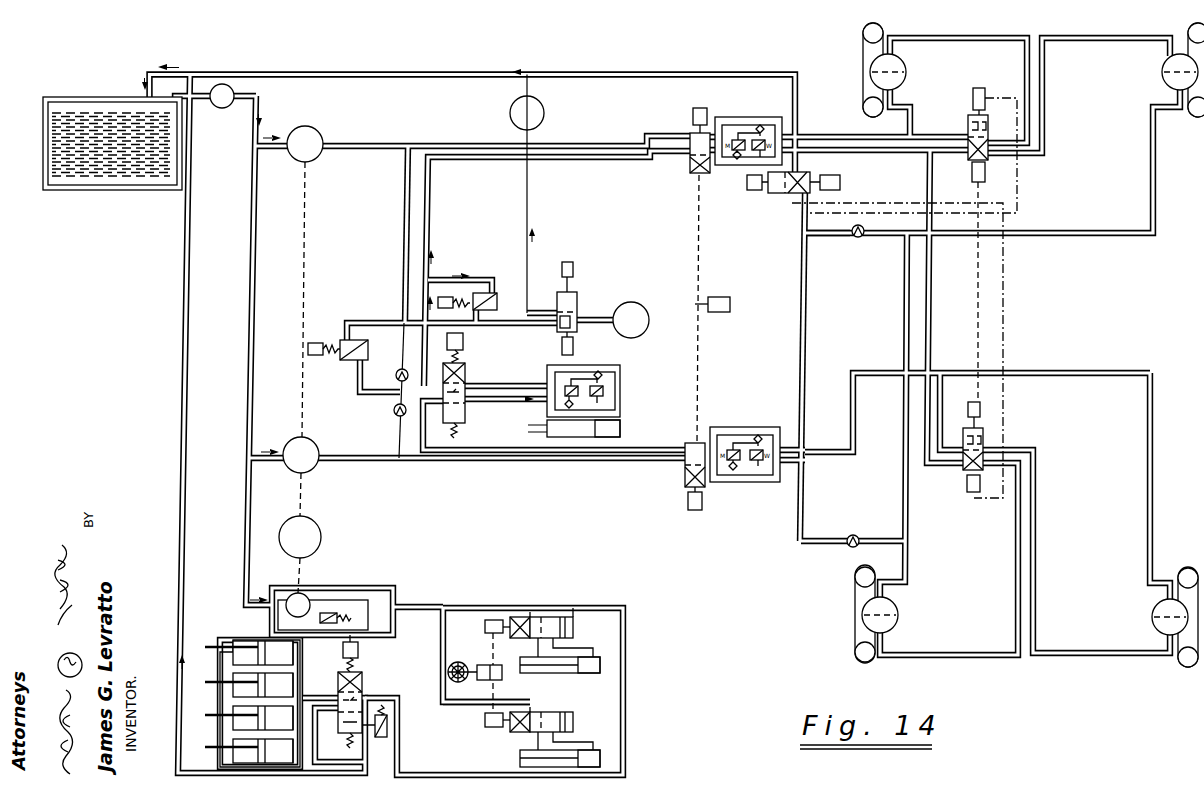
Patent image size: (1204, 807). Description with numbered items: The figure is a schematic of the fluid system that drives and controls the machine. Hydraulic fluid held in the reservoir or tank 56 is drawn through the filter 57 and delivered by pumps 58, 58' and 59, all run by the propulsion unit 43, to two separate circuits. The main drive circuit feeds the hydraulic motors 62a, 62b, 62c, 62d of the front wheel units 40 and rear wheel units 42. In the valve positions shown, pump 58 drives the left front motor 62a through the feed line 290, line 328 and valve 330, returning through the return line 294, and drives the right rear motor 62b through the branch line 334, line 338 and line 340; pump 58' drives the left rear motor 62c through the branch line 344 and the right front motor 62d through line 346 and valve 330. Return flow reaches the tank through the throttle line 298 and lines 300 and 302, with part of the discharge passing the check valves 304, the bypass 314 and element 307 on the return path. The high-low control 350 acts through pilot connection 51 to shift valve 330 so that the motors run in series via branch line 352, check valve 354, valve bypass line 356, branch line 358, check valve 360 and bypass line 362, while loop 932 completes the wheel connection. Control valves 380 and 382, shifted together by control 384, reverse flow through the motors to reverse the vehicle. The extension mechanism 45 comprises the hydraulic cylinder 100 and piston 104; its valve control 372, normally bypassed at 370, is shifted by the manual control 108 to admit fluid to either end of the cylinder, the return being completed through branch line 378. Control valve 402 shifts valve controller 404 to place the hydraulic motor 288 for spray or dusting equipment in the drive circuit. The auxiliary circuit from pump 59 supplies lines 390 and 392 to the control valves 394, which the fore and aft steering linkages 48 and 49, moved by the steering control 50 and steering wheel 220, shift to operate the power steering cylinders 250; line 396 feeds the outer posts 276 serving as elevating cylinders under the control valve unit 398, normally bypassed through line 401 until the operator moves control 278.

The front wheel unit 40 is at (851, 52).
The rear wheel unit 42 is at (842, 595).
The propulsion unit 43 is at (318, 542).
The extension mechanism 45 is at (642, 415).
The fore steering linkage 48 is at (486, 627).
The aft steering linkage 49 is at (492, 728).
The steering control 50 is at (504, 681).
The control linkage 51 is at (1016, 192).
The reservoir or tank 56 is at (92, 188).
The filter 57 is at (221, 108).
The fluid pump 58 is at (320, 138).
The fluid pump 58' is at (297, 446).
The fluid pump 59 is at (302, 588).
The hydraulic motor 62a is at (904, 66).
The hydraulic motor 62b is at (1158, 610).
The hydraulic motor 62c is at (900, 611).
The hydraulic motor 62d is at (1170, 86).
The hydraulic cylinder 100 is at (620, 428).
The piston 104 is at (528, 430).
The manual control 108 is at (465, 340).
The steering wheel 220 is at (458, 660).
The power steering cylinder 250 is at (560, 673).
The outer post 276 is at (250, 640).
The control 278 is at (360, 653).
The hydraulic motor 288 is at (640, 309).
The feed line 290 is at (576, 144).
The return line 294 is at (579, 162).
The throttle line 298 is at (481, 280).
The line 300 is at (528, 193).
The line 302 is at (424, 74).
The check valve 304 is at (396, 411).
The filter 307 is at (516, 118).
The bypass 314 is at (586, 328).
The line 328 is at (840, 182).
The valve 330 is at (968, 127).
The branch line 334 is at (928, 323).
The line 338 is at (1152, 475).
The line 340 is at (856, 418).
The branch line 344 is at (905, 300).
The line 346 is at (1153, 210).
The high-low control or shift lever 350 is at (788, 194).
The branch line 352 is at (834, 236).
The check valve 354 is at (877, 242).
The valve bypass line 356 is at (988, 116).
The branch line 358 is at (800, 350).
The check valve 360 is at (856, 536).
The bypass line 362 is at (984, 430).
The bypass connection 370 is at (470, 368).
The valve control 372 is at (468, 417).
The branch line 378 is at (518, 386).
The control valve 380 is at (692, 176).
The control valve 382 is at (686, 471).
The control 384 is at (721, 300).
The line 390 is at (466, 608).
The line 392 is at (474, 706).
The control valve 394 is at (573, 627).
The line 396 is at (458, 752).
The control valve unit 398 is at (366, 681).
The line 401 is at (364, 698).
The control valve 402 is at (576, 268).
The valve controller 404 is at (579, 300).
The hydraulic line 932 is at (976, 38).